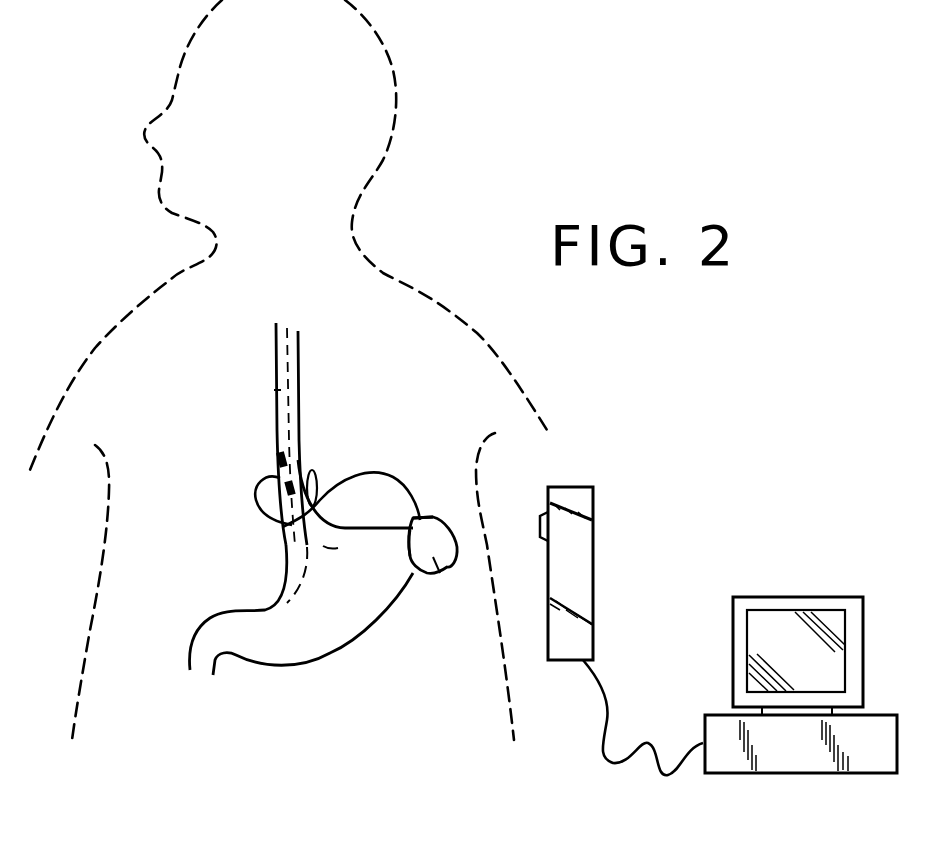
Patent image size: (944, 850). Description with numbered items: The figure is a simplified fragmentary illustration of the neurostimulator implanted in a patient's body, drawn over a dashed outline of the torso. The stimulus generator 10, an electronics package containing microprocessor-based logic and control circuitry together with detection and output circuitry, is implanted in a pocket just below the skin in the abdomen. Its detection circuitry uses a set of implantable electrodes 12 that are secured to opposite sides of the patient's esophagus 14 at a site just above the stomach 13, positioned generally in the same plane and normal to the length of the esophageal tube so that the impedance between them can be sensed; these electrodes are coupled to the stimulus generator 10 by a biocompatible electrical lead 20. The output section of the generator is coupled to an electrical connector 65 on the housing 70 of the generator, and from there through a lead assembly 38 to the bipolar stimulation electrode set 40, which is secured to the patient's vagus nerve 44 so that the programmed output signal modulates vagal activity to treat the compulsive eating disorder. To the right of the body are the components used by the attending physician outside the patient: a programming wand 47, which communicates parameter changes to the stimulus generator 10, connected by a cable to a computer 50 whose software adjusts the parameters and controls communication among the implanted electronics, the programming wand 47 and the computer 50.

The stimulus generator 10 is at (431, 560).
The implantable electrodes 12 is at (258, 476).
The stomach 13 is at (340, 627).
The esophagus 14 is at (296, 372).
The electrical lead 20 is at (290, 523).
The lead assembly 38 is at (316, 472).
The stimulation electrode set 40 is at (270, 462).
The vagus nerve 44 is at (279, 394).
The programming wand 47 is at (598, 613).
The computer 50 is at (718, 694).
The electrical connector 65 is at (432, 518).
The housing 70 is at (410, 558).